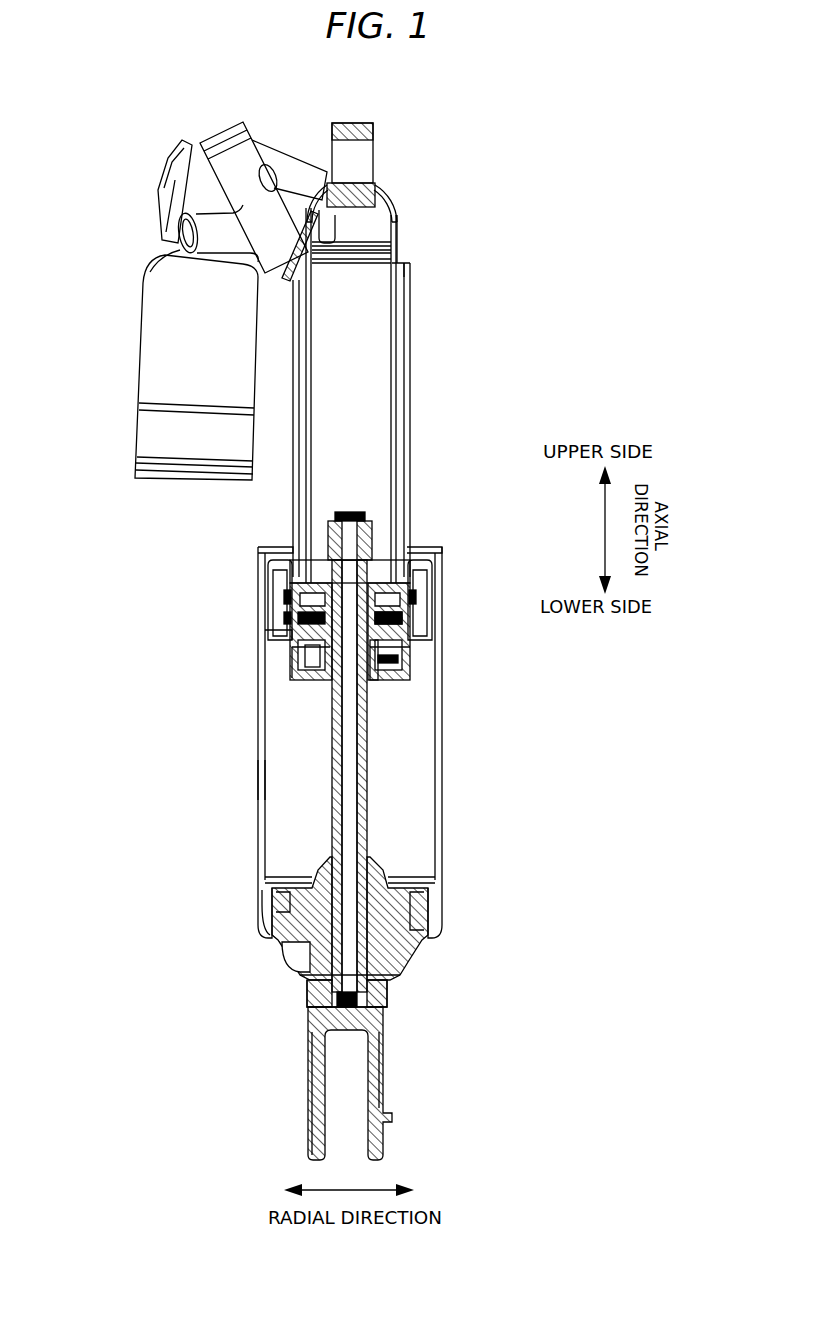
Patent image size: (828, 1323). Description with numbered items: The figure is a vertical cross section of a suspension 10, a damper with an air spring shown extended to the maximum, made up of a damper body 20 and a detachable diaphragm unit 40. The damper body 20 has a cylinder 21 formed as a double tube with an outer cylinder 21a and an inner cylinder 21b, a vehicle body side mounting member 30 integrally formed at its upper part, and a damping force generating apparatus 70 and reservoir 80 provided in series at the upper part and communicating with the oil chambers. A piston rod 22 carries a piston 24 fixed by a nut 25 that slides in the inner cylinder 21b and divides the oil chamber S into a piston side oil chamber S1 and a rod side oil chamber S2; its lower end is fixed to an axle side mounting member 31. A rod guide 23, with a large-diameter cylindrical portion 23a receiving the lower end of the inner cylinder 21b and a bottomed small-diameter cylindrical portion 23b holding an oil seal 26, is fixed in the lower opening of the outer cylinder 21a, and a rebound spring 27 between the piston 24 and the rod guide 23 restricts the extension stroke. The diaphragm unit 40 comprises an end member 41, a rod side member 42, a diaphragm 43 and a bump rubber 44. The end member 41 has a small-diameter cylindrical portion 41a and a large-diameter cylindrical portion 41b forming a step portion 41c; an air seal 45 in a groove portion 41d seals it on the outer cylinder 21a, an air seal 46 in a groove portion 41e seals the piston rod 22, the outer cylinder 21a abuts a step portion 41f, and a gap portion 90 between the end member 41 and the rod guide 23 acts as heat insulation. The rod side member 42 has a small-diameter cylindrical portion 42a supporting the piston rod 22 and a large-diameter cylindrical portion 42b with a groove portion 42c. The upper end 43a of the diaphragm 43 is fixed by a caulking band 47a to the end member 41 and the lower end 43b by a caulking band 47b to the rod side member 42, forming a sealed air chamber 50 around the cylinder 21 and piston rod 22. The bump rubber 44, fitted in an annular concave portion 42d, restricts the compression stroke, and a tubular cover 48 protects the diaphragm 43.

The suspension 10 is at (490, 147).
The damper body 20 is at (492, 418).
The cylinder 21 is at (396, 383).
The outer cylinder 21a is at (408, 322).
The inner cylinder 21b is at (400, 343).
The piston rod 22 is at (360, 743).
The rod guide 23 is at (450, 636).
The large-diameter cylindrical portion 23a is at (413, 640).
The small-diameter cylindrical portion 23b is at (413, 653).
The piston 24 is at (372, 536).
The nut 25 is at (370, 522).
The oil seal 26 is at (292, 648).
The rebound spring 27 is at (420, 603).
The vehicle body side mounting member 30 is at (358, 123).
The axle side mounting member 31 is at (390, 1115).
The diaphragm unit 40 is at (182, 664).
The end member 41 is at (205, 552).
The small-diameter cylindrical portion 41a is at (270, 582).
The large-diameter cylindrical portion 41b is at (268, 563).
The step portion 41c is at (282, 599).
The groove portion 41d is at (440, 558).
The groove portion 41e is at (317, 670).
The step portion 41f is at (284, 658).
The rod side member 42 is at (382, 940).
The small-diameter cylindrical portion 42a is at (400, 967).
The large-diameter cylindrical portion 42b is at (433, 922).
The groove portion 42c is at (433, 905).
The annular concave portion 42d is at (311, 984).
The diaphragm 43 is at (259, 692).
The upper end 43a is at (274, 637).
The lower end 43b is at (263, 922).
The bump rubber 44 is at (290, 958).
The air seal 45 is at (426, 588).
The air seal 46 is at (371, 678).
The caulking band 47a is at (284, 618).
The caulking band 47b is at (263, 903).
The cover 48 is at (259, 758).
The air chamber 50 is at (400, 801).
The damping force generating apparatus 70 is at (190, 142).
The reservoir 80 is at (160, 350).
The gap portion 90 is at (394, 664).
The oil chamber S is at (238, 500).
The piston side oil chamber S1 is at (317, 507).
The rod side oil chamber S2 is at (300, 530).